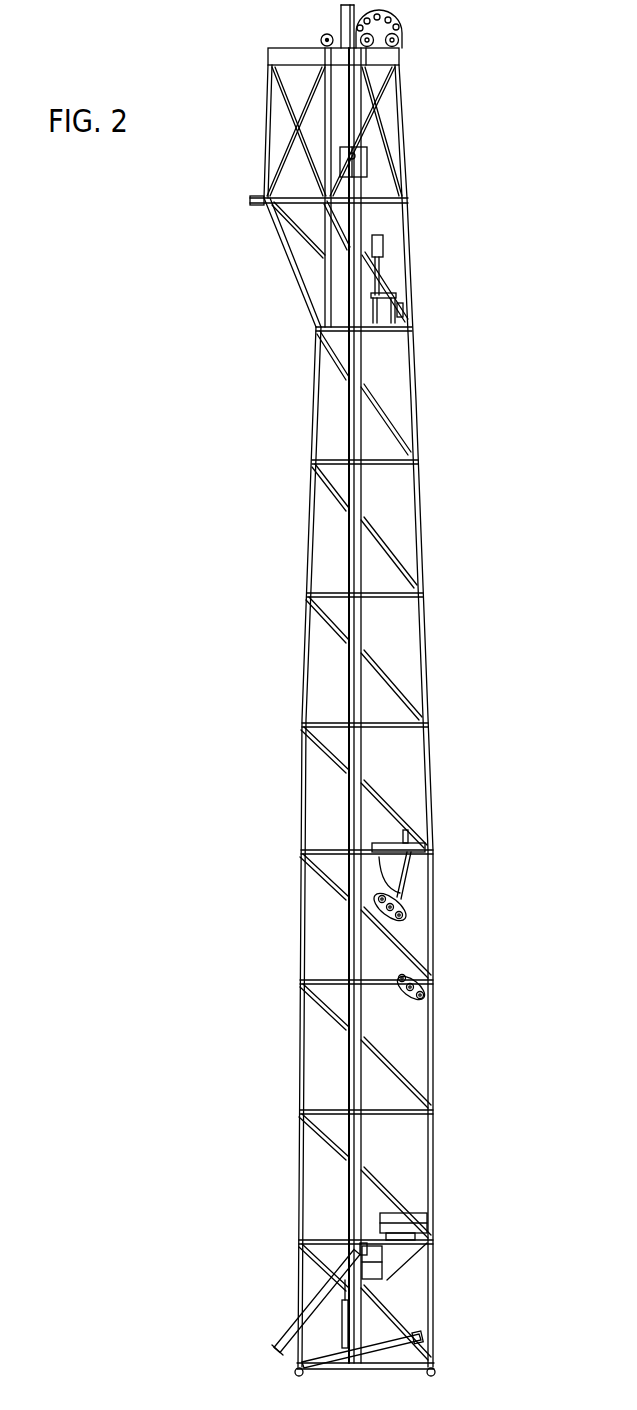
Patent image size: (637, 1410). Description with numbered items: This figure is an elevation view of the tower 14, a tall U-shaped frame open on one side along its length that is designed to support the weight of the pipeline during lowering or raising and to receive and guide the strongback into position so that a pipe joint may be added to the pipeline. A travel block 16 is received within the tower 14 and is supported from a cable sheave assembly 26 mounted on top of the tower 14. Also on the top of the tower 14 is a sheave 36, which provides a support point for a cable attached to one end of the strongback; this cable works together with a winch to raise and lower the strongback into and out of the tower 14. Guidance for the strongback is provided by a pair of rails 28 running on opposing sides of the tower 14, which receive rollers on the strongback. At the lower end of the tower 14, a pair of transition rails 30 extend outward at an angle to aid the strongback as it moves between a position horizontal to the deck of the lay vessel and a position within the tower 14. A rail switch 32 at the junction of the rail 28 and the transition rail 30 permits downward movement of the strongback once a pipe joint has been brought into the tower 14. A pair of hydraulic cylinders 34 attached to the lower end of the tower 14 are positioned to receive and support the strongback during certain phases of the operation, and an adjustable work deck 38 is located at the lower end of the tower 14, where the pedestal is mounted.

The tower 14 is at (418, 400).
The travel block 16 is at (368, 168).
The cable sheave assembly 26 is at (404, 34).
The rails 28 is at (349, 667).
The transition rails 30 is at (280, 1345).
The rail switch 32 is at (350, 1253).
The hydraulic cylinders 34 is at (340, 1323).
The sheave 36 is at (321, 40).
The adjustable work deck 38 is at (412, 1337).